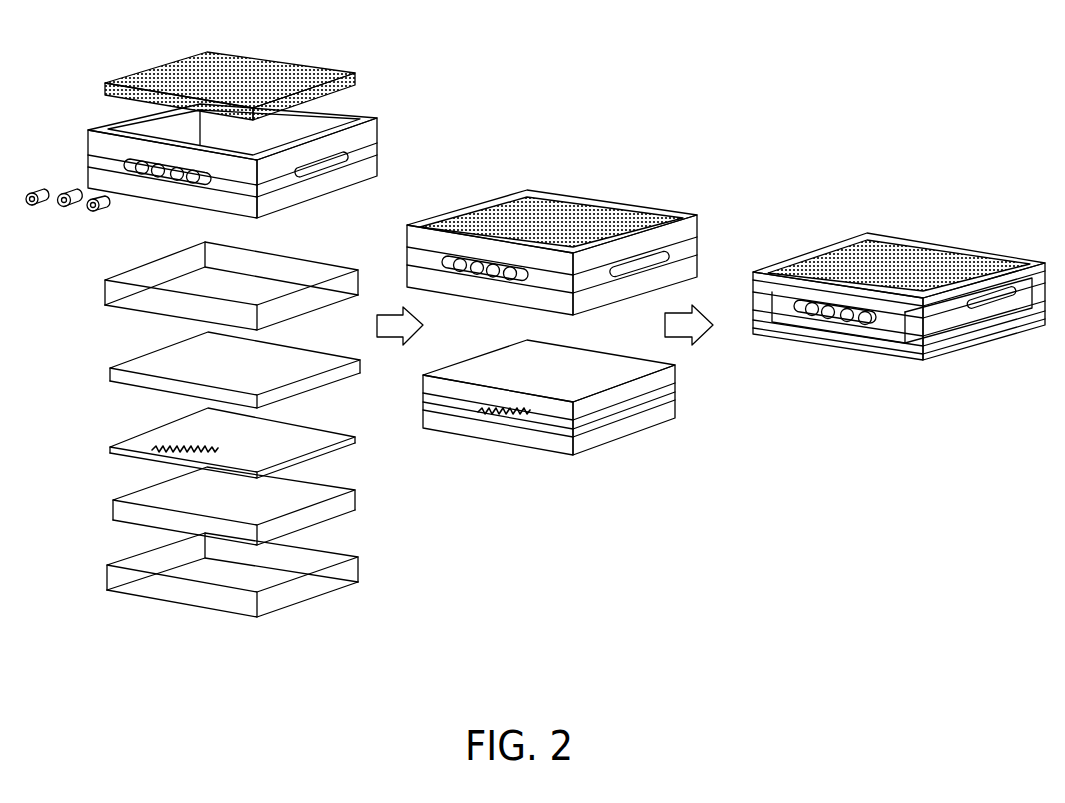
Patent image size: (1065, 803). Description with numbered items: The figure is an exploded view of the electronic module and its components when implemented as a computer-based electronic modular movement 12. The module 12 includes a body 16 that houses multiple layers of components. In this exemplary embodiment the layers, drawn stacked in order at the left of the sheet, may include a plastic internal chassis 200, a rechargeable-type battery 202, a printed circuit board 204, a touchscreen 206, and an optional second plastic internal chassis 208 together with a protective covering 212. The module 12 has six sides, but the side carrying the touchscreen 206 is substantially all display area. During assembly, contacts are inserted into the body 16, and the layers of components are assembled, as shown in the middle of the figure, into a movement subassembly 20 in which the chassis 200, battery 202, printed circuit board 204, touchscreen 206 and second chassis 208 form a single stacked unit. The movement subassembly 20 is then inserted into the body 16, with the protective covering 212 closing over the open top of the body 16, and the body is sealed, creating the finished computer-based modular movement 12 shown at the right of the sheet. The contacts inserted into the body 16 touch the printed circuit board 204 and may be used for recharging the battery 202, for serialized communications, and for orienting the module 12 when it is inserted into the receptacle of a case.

The module 12 is at (933, 244).
The body 16 is at (98, 126).
The movement subassembly 20 is at (633, 433).
The plastic internal chassis 200 is at (98, 575).
The rechargeable-type battery 202 is at (98, 506).
The printed circuit board 204 is at (98, 450).
The touchscreen 206 is at (98, 376).
The second plastic internal chassis 208 is at (98, 289).
The protective covering 212 is at (163, 63).